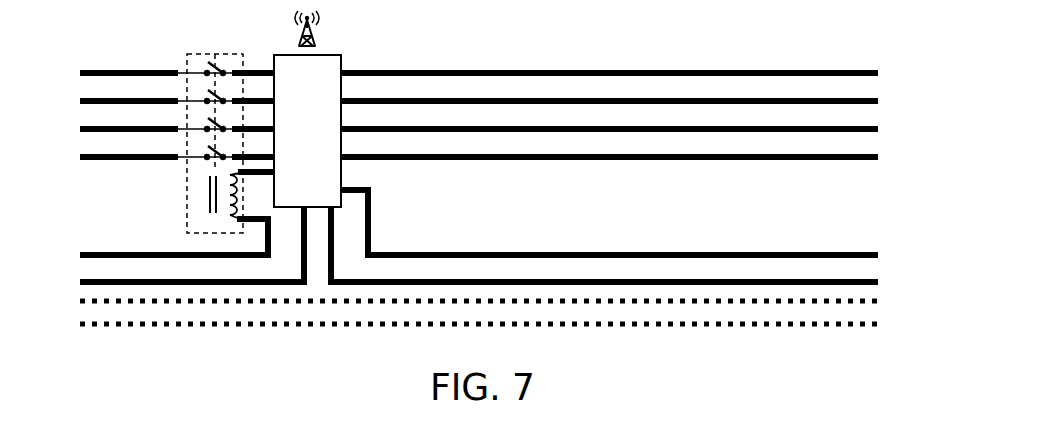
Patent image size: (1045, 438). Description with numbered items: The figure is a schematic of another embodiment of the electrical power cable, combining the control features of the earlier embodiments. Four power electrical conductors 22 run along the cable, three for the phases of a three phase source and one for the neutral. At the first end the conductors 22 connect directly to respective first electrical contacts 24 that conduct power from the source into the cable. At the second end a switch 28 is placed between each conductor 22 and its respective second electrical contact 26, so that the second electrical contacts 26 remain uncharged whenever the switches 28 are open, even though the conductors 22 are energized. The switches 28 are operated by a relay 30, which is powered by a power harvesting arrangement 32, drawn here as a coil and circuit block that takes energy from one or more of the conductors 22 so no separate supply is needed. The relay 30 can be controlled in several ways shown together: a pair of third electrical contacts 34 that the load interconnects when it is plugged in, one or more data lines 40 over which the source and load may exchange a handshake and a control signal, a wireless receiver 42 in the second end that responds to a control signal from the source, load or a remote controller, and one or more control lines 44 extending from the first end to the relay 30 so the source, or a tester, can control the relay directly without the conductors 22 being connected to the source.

The power electrical conductor 22 is at (527, 70).
The first electrical contact 24 is at (878, 72).
The second electrical contact 26 is at (80, 71).
The switch 28 is at (204, 63).
The relay 30 is at (209, 197).
The power harvesting arrangement 32 is at (341, 56).
The third electrical contact 34 is at (80, 254).
The data line 40 is at (624, 328).
The wireless receiver 42 is at (319, 33).
The control line 44 is at (616, 253).